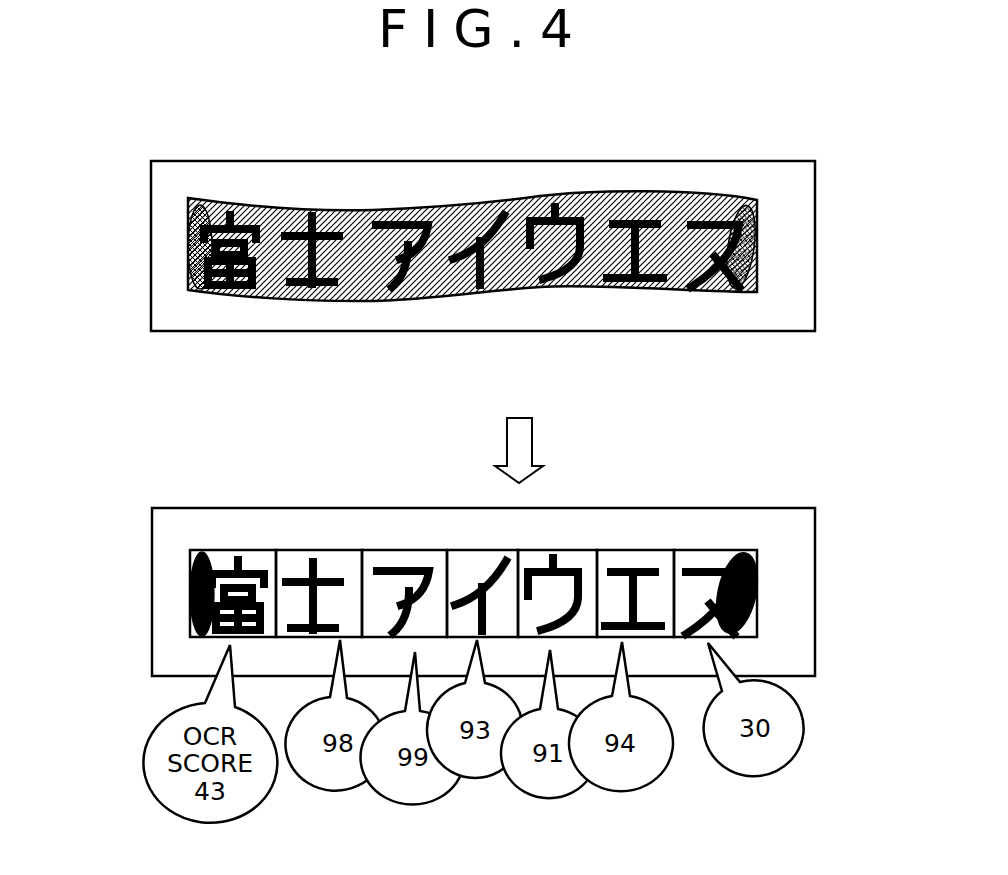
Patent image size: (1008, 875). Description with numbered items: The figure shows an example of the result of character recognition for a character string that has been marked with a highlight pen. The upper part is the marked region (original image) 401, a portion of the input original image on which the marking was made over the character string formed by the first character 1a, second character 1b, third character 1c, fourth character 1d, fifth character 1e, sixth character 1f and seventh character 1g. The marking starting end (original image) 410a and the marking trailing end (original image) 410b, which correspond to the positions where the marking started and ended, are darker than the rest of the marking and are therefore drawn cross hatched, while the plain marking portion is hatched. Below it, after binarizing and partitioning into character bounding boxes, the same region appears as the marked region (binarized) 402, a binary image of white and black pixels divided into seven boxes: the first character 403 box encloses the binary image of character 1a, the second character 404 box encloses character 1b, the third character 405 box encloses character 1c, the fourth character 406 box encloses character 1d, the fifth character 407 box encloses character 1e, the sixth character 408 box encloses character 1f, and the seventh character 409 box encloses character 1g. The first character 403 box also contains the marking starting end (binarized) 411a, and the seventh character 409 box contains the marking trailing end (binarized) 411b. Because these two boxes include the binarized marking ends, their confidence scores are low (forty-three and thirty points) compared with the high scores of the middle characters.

The first character of the marked character string 1a is at (232, 203).
The second character of the marked character string 1b is at (315, 289).
The third character of the marked character string 1c is at (392, 300).
The fourth character of the marked character string 1d is at (483, 290).
The fifth character of the marked character string 1e is at (565, 287).
The sixth character of the marked character string 1f is at (630, 286).
The seventh character of the marked character string 1g is at (698, 287).
The marked region (original image) 401 is at (773, 160).
The marked region (binarized) 402 is at (387, 507).
The first character bounding box 403 is at (247, 549).
The second character bounding box 404 is at (332, 549).
The third character bounding box 405 is at (417, 549).
The fourth character bounding box 406 is at (487, 549).
The fifth character bounding box 407 is at (565, 549).
The sixth character bounding box 408 is at (642, 549).
The seventh character bounding box 409 is at (727, 549).
The marking starting end (original image) 410a is at (187, 256).
The marking trailing end (original image) 410b is at (755, 230).
The marking starting end (binarized) 411a is at (190, 600).
The marking trailing end (binarized) 411b is at (757, 576).